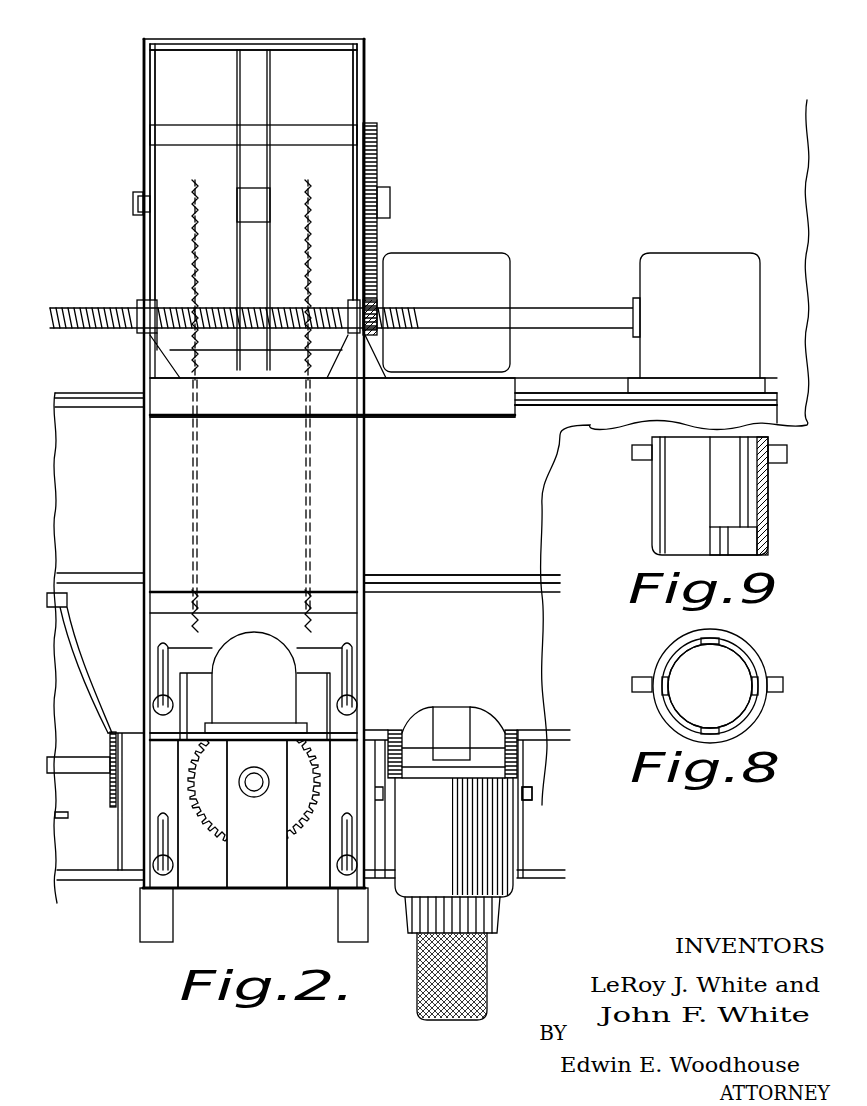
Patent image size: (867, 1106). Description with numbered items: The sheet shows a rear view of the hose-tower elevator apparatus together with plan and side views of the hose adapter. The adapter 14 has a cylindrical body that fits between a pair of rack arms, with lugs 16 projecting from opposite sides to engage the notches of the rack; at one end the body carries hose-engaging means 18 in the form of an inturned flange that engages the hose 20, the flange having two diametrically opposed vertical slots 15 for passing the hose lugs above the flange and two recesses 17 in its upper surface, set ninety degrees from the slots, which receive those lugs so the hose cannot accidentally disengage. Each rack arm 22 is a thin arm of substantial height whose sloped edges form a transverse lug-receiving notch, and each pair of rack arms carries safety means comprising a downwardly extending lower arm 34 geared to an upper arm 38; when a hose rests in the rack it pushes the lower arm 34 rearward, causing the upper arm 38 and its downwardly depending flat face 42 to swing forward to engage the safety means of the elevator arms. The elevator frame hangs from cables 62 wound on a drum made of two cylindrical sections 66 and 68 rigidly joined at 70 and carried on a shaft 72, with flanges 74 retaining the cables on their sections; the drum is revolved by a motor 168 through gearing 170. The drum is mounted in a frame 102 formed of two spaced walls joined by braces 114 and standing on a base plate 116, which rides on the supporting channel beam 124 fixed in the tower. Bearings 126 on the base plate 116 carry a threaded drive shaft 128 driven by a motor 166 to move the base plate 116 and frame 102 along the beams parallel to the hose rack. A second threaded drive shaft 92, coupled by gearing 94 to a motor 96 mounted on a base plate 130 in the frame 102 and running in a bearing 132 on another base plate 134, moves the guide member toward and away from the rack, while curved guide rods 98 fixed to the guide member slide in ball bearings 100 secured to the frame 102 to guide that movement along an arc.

In FIG. 2, the hose adapter 14 is at (500, 880).
In FIG. 9, the hose adapter 14 is at (660, 517).
In FIG. 8, the hose adapter 14 is at (760, 655).
In FIG. 9, the vertical slots 15 is at (750, 537).
In FIG. 8, the vertical slots 15 is at (715, 640).
In FIG. 2, the lugs 16 is at (530, 793).
In FIG. 9, the lugs 16 is at (640, 455).
In FIG. 8, the lugs 16 is at (638, 680).
In FIG. 9, the recesses 17 is at (755, 535).
In FIG. 8, the recesses 17 is at (660, 700).
In FIG. 9, the hose-engaging means 18 is at (735, 560).
In FIG. 8, the hose-engaging means 18 is at (690, 720).
In FIG. 2, the hose 20 is at (487, 975).
In FIG. 2, the rack arm 22 is at (386, 740).
In FIG. 2, the downwardly extending arm 34 is at (110, 793).
In FIG. 2, the upper arm 38 is at (65, 665).
In FIG. 2, the flat face 42 is at (448, 712).
In FIG. 2, the cables 62 is at (193, 265).
In FIG. 2, the drum section 66 is at (185, 70).
In FIG. 2, the drum section 68 is at (312, 68).
In FIG. 2, the rigid connection 70 is at (255, 200).
In FIG. 2, the shaft 72 is at (133, 205).
In FIG. 2, the flanges 74 is at (150, 52).
In FIG. 2, the drive shaft 92 is at (255, 798).
In FIG. 2, the gearing 94 is at (290, 825).
In FIG. 2, the motor 96 is at (270, 650).
In FIG. 2, the guide rods 98 is at (158, 648).
In FIG. 2, the bearings 100 is at (158, 700).
In FIG. 2, the frame 102 is at (364, 77).
In FIG. 2, the braces 114 is at (343, 42).
In FIG. 2, the base plate 116 is at (495, 395).
In FIG. 2, the supporting channel beam 124 is at (540, 555).
In FIG. 2, the bearings 126 is at (143, 335).
In FIG. 2, the threaded drive shaft 128 is at (545, 312).
In FIG. 2, the base plate 130 is at (165, 730).
In FIG. 2, the bearing 132 is at (243, 870).
In FIG. 2, the base plate 134 is at (300, 885).
In FIG. 2, the motor 166 is at (695, 262).
In FIG. 2, the motor 168 is at (495, 262).
In FIG. 2, the gearing 170 is at (380, 250).